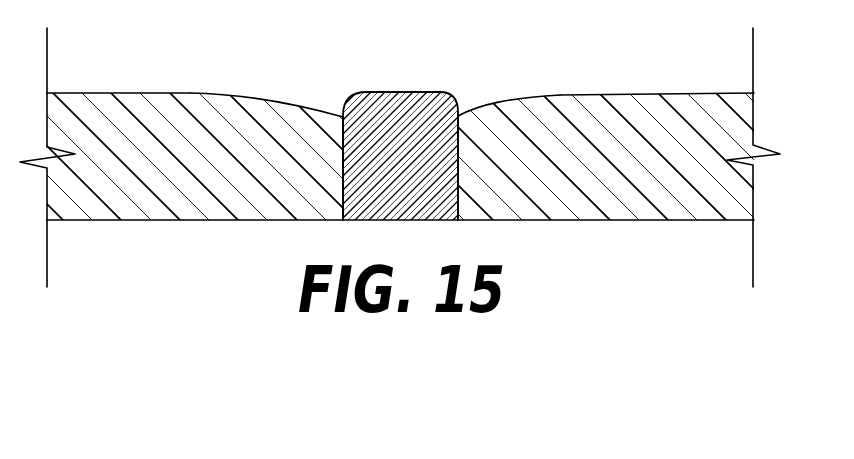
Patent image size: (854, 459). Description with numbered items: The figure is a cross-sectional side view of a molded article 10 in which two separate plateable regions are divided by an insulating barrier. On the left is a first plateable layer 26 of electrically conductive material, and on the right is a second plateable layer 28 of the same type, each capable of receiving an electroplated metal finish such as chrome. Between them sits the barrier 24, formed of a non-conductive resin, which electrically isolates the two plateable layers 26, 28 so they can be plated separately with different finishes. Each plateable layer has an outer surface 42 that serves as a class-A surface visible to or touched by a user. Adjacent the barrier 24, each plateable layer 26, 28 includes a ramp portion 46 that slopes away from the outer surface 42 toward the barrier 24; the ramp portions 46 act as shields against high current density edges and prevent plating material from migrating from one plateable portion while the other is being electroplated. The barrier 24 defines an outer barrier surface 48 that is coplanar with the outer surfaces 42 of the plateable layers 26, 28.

The molded article 10 is at (73, 76).
The barrier 24 is at (357, 108).
The first plateable layer 26 is at (135, 120).
The second plateable layer 28 is at (709, 117).
The outer surface 42 is at (113, 93).
The ramp portion 46 is at (270, 97).
The outer barrier surface 48 is at (413, 92).